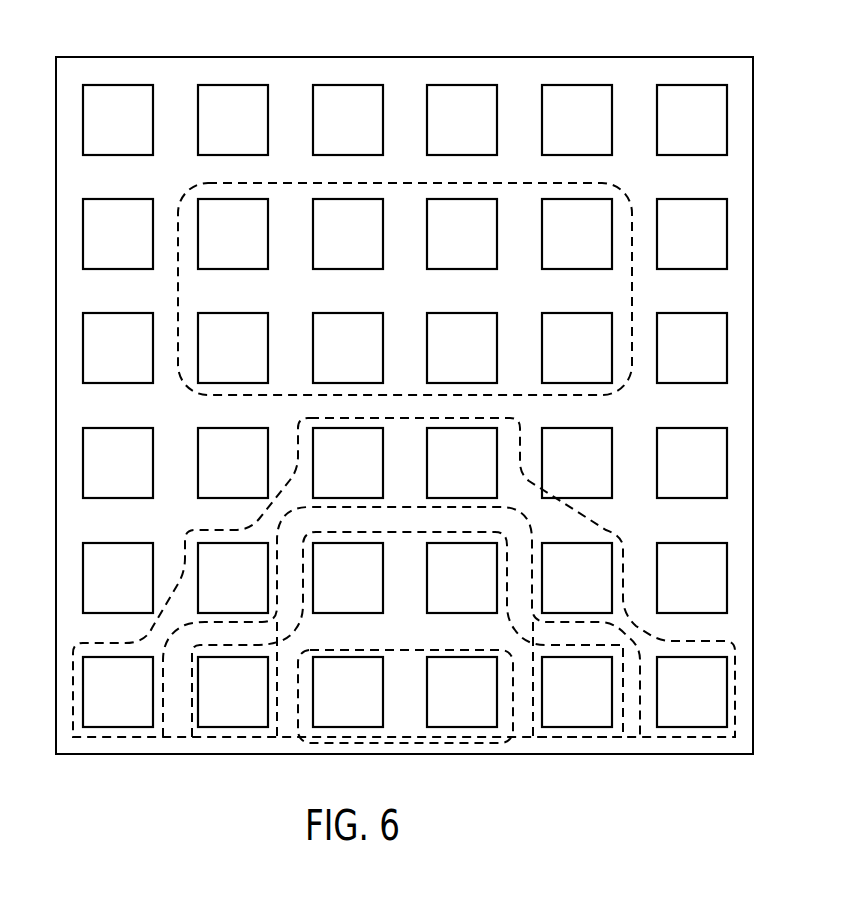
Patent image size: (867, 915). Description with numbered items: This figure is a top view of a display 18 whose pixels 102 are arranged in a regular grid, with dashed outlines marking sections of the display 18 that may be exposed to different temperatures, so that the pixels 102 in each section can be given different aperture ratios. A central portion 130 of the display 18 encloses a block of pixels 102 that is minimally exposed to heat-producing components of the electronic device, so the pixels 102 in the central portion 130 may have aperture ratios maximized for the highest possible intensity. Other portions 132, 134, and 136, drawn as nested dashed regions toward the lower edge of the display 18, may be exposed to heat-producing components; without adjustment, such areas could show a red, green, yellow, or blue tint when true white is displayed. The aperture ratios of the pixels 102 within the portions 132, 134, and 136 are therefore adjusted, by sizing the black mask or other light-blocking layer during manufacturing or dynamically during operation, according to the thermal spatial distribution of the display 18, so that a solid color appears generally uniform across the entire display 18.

The display 18 is at (530, 57).
The pixels 102 is at (98, 131).
The central portion 130 is at (604, 184).
The portion 132 is at (417, 744).
The portion 134 is at (583, 740).
The portion 136 is at (606, 532).